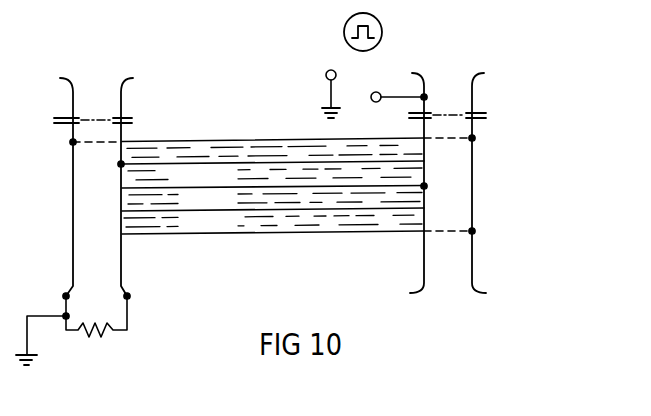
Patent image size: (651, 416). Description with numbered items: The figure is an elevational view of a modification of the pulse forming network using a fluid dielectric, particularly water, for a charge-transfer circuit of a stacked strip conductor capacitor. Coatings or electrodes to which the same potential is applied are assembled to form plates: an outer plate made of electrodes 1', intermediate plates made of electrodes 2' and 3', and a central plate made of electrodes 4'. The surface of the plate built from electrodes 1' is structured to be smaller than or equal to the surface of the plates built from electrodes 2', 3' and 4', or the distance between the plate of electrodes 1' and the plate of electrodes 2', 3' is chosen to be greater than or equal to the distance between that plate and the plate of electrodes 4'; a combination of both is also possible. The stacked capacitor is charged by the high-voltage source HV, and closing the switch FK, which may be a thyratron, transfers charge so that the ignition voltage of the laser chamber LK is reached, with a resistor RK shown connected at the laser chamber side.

The laser chamber LK is at (93, 177).
The switch FK is at (447, 197).
The high-voltage source HV is at (374, 65).
The cathode resistor RK is at (93, 336).
The plate 1' is at (273, 188).
The plate 2' is at (273, 199).
The plate 3' is at (273, 199).
The plate 4' is at (273, 197).